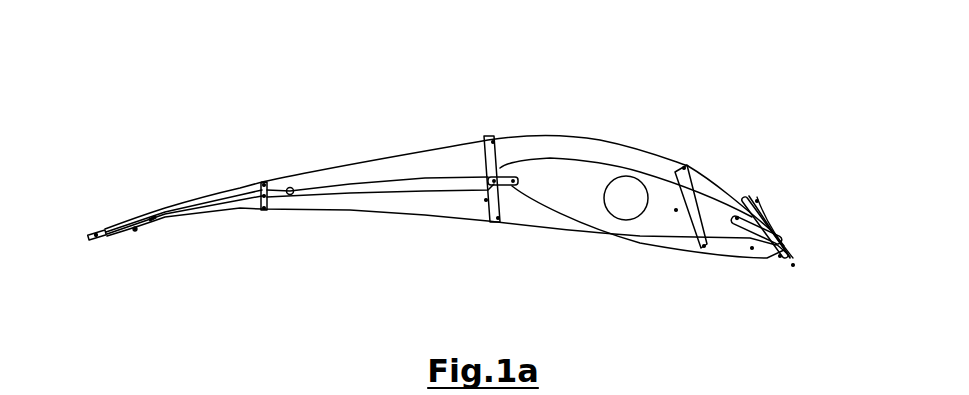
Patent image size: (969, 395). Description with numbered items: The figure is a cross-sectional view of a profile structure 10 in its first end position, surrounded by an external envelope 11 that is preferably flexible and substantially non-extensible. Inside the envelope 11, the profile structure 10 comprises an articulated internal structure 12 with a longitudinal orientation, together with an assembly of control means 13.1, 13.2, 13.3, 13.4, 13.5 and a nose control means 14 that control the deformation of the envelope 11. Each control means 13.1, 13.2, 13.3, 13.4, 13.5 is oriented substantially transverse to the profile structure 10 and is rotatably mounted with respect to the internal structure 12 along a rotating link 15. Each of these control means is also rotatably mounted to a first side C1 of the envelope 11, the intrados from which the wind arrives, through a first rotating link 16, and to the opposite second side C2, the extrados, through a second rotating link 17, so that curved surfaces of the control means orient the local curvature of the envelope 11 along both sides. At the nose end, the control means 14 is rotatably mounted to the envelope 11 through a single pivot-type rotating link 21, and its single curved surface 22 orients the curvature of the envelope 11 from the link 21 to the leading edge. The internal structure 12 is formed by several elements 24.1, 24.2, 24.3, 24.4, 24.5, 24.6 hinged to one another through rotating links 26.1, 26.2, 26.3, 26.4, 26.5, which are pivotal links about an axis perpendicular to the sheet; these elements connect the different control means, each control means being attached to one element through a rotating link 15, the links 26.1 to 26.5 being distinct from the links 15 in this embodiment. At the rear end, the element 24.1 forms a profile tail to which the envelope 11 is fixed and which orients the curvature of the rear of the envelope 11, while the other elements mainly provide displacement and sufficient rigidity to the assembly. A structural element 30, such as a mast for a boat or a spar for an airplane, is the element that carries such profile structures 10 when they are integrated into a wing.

The profile structure 10 is at (258, 103).
The external envelope 11 is at (554, 170).
The articulated internal structure 12 is at (408, 204).
The control means 13.1 is at (136, 233).
The control means 13.2 is at (265, 182).
The control means 13.3 is at (486, 140).
The control means 13.4 is at (681, 167).
The control means 13.5 is at (765, 215).
The nose control means 14 is at (780, 237).
The rotating link 15 is at (260, 205).
The first rotating link 16 is at (265, 211).
The second rotating link 17 is at (262, 184).
The rotating link 21 is at (790, 243).
The single curved surface 22 is at (795, 248).
The profile tail 24.1 is at (103, 230).
The element 24.2 is at (130, 222).
The element 24.3 is at (195, 207).
The element 24.4 is at (367, 188).
The element 24.5 is at (537, 139).
The element 24.6 is at (745, 245).
The rotating link 26.1 is at (103, 236).
The rotating link 26.2 is at (155, 220).
The rotating link 26.3 is at (293, 190).
The rotating link 26.4 is at (516, 184).
The rotating link 26.5 is at (737, 215).
The structural element 30 is at (628, 212).
The first side C1 is at (527, 279).
The second side C2 is at (370, 104).